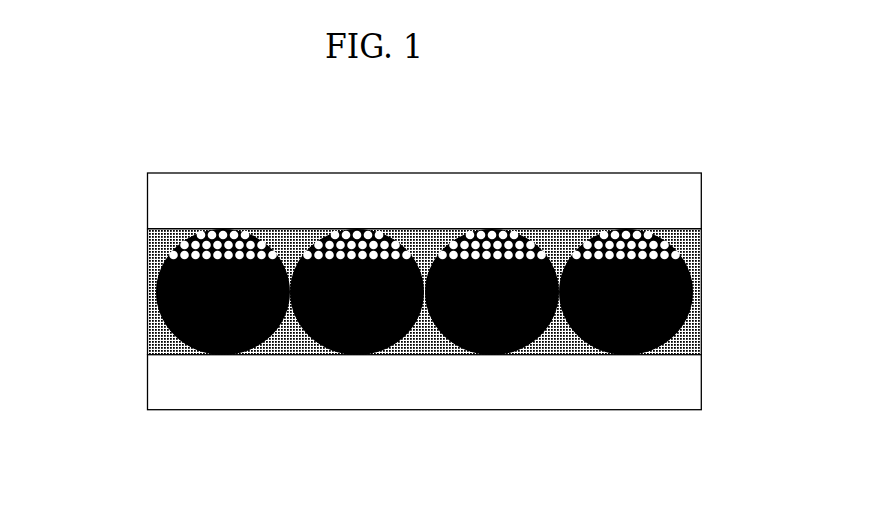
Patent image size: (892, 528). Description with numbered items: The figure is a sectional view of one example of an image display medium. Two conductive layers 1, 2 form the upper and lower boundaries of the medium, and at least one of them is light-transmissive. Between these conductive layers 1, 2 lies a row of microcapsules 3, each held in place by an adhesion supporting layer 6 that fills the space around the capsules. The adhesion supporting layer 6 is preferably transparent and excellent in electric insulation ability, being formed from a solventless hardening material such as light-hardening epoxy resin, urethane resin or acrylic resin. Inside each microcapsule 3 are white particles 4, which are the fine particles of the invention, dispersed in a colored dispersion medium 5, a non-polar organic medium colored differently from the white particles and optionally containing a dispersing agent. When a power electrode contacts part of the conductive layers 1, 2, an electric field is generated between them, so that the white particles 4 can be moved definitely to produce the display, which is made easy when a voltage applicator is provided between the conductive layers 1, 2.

The conductive layer 1 is at (152, 382).
The conductive layer 2 is at (150, 197).
The microcapsule 3 is at (270, 327).
The white particles 4 is at (693, 217).
The colored dispersion medium 5 is at (693, 323).
The adhesion supporting layer 6 is at (418, 330).